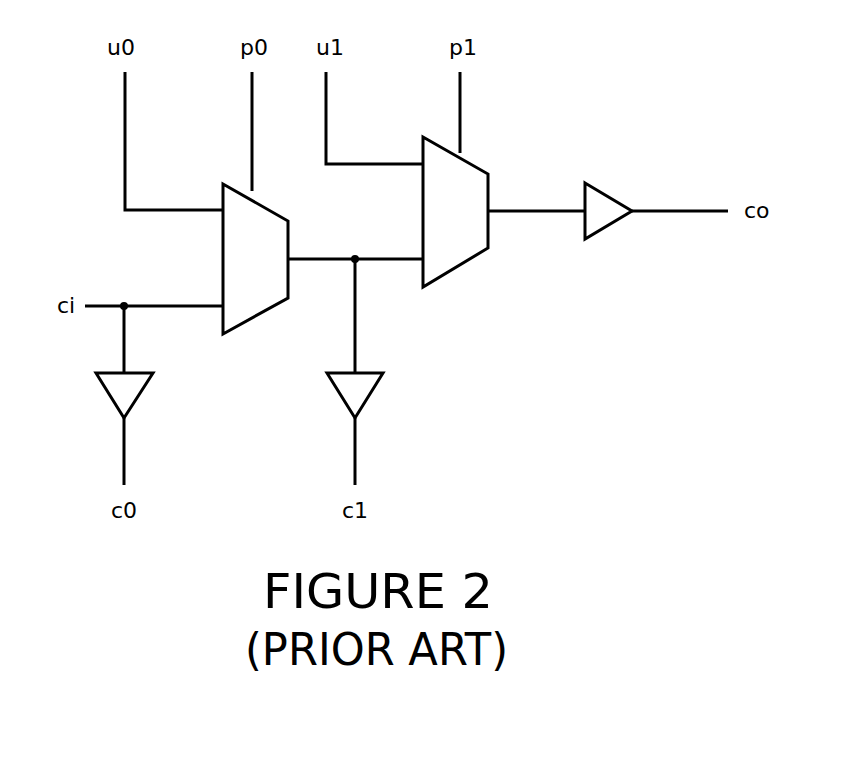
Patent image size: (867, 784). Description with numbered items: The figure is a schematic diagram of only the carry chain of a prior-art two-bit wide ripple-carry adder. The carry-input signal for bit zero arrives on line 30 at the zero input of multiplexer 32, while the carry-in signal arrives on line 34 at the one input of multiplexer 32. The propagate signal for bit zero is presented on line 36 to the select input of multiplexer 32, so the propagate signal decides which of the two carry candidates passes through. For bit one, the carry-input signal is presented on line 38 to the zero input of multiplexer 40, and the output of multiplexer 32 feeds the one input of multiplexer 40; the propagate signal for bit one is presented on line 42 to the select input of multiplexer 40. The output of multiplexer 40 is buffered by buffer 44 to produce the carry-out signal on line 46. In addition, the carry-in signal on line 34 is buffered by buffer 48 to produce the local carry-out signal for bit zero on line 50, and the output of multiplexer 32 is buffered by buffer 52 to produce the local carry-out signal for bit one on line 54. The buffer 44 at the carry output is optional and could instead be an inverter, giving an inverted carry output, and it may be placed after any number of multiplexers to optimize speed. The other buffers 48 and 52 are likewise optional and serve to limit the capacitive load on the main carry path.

The line 30 is at (174, 141).
The multiplexer 32 is at (266, 251).
The line 34 is at (154, 282).
The line 36 is at (278, 131).
The line 38 is at (374, 118).
The multiplexer 40 is at (504, 204).
The line 42 is at (486, 112).
The buffer 44 is at (614, 192).
The line 46 is at (680, 187).
The buffer 48 is at (133, 370).
The line 50 is at (151, 451).
The buffer 52 is at (360, 373).
The line 54 is at (381, 451).